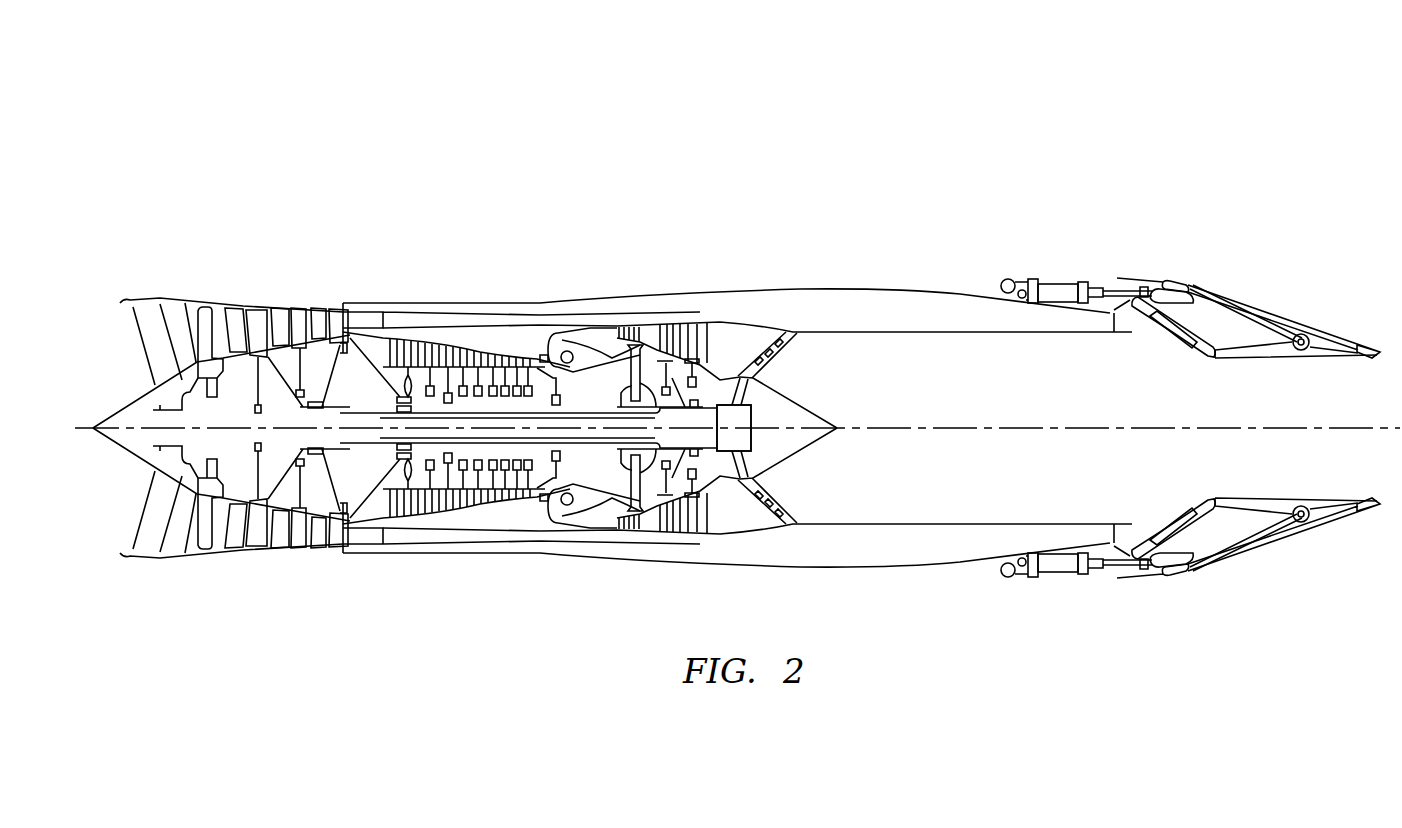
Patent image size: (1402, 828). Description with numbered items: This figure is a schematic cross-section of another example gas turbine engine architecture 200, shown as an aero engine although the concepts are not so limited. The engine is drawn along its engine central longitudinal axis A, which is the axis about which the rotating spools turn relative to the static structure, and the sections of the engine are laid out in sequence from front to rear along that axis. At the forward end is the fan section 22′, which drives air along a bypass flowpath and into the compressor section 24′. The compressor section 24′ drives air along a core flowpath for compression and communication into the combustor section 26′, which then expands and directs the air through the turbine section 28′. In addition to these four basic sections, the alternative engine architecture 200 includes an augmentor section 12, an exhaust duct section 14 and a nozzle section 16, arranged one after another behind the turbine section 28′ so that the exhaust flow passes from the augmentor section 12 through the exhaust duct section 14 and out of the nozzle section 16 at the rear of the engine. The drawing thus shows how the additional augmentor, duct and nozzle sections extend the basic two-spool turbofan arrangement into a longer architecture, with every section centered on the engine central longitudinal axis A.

The alternative engine architecture 200 is at (1034, 128).
The fan section 22′ is at (120, 228).
The compressor section 24′ is at (559, 228).
The combustor section 26′ is at (559, 228).
The turbine section 28′ is at (712, 228).
The augmentor section 12 is at (712, 228).
The exhaust duct section 14 is at (1123, 228).
The nozzle section 16 is at (1123, 228).
The engine central longitudinal axis A is at (1028, 430).